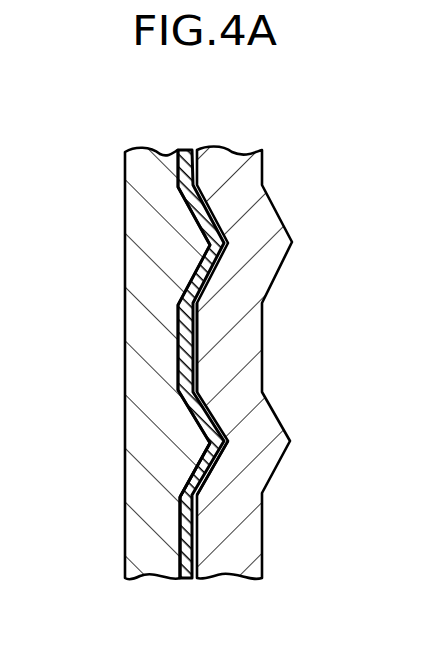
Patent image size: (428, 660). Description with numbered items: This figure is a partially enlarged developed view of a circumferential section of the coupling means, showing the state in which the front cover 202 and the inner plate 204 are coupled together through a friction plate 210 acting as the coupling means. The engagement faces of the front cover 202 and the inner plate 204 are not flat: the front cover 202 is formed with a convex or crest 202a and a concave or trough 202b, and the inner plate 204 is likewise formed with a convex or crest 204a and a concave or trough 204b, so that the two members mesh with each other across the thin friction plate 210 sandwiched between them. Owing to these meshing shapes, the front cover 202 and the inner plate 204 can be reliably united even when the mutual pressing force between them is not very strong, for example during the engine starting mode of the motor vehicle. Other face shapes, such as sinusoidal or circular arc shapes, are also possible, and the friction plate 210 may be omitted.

The front cover 202 is at (252, 235).
The convex of front cover 202a is at (216, 342).
The concave of front cover 202b is at (242, 441).
The inner plate 204 is at (153, 238).
The convex of inner plate 204a is at (186, 447).
The concave of inner plate 204b is at (165, 520).
The friction plate 210 is at (178, 353).